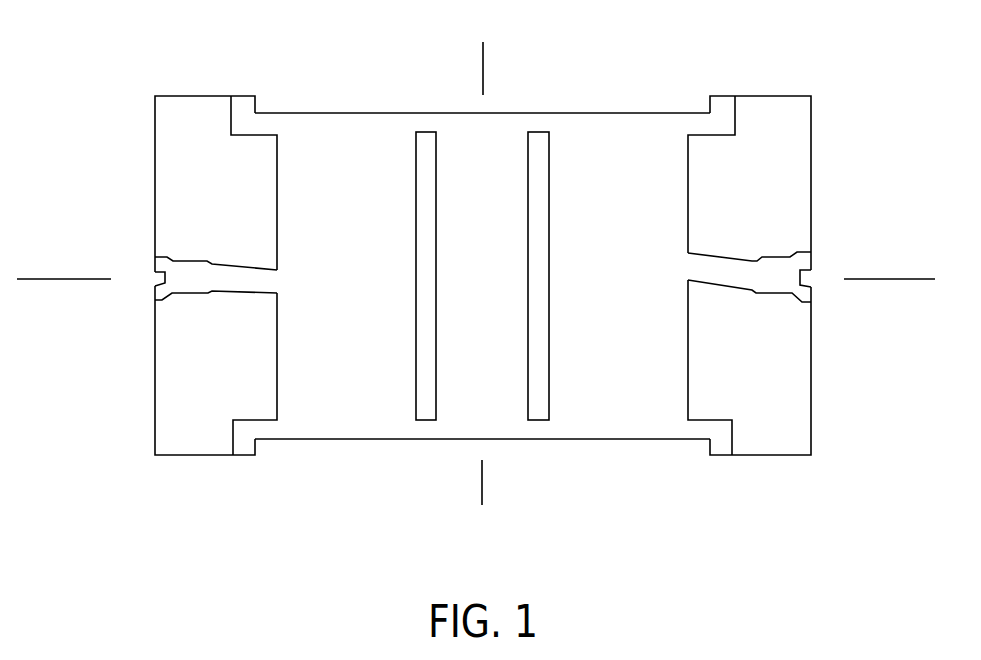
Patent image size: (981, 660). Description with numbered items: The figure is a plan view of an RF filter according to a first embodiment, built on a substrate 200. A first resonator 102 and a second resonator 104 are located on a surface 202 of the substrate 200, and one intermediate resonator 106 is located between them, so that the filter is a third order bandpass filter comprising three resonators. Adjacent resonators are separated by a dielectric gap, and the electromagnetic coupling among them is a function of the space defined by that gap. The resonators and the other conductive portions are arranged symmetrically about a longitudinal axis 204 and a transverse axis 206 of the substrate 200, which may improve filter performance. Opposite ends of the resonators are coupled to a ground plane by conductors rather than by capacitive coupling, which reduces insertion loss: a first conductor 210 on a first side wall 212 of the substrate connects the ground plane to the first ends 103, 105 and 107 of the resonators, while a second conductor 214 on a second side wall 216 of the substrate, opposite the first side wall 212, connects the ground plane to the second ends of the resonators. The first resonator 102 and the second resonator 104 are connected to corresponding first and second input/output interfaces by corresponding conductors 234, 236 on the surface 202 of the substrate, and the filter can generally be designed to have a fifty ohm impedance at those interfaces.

The substrate 200 is at (122, 135).
The surface of the substrate 202 is at (193, 208).
The longitudinal axis 204 is at (63, 280).
The transverse axis 206 is at (483, 62).
The first resonator 102 is at (382, 197).
The first end of the first resonator 103 is at (324, 405).
The second resonator 104 is at (639, 178).
The first end of the intermediate resonator 105 is at (507, 407).
The intermediate resonator 106 is at (464, 187).
The first end of the second resonator 107 is at (583, 405).
The first conductor 210 is at (662, 440).
The first side wall 212 is at (770, 456).
The second conductor 214 is at (670, 113).
The second side wall 216 is at (743, 96).
The conductor 234 is at (213, 293).
The conductor 236 is at (742, 258).